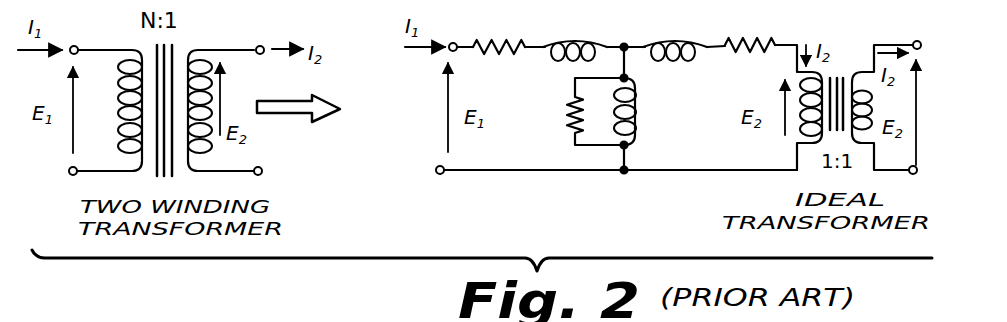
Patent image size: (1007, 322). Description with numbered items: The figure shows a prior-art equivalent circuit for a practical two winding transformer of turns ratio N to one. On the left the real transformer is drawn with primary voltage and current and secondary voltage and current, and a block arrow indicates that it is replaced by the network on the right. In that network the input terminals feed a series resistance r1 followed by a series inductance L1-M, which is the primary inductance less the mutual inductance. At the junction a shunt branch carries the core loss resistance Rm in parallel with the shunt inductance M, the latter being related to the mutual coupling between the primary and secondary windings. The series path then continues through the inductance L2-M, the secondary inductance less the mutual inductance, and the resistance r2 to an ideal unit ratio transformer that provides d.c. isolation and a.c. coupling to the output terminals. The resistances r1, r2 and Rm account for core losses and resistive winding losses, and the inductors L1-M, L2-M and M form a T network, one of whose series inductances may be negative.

The primary winding resistance r1 is at (499, 32).
The primary series inductance L1-M is at (575, 35).
The secondary series inductance L2-M is at (675, 35).
The secondary winding resistance r2 is at (750, 31).
The core loss resistance Rm is at (576, 111).
The shunt inductance M is at (638, 111).